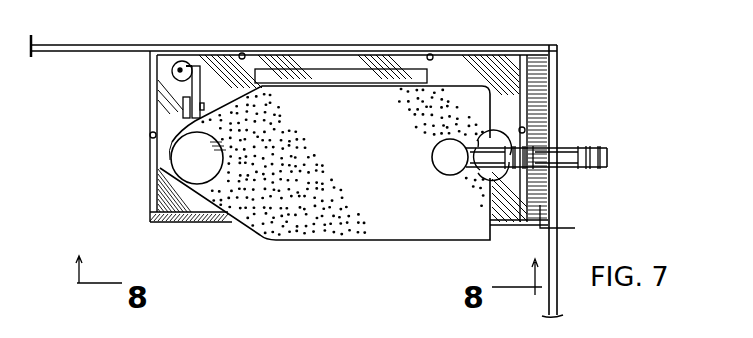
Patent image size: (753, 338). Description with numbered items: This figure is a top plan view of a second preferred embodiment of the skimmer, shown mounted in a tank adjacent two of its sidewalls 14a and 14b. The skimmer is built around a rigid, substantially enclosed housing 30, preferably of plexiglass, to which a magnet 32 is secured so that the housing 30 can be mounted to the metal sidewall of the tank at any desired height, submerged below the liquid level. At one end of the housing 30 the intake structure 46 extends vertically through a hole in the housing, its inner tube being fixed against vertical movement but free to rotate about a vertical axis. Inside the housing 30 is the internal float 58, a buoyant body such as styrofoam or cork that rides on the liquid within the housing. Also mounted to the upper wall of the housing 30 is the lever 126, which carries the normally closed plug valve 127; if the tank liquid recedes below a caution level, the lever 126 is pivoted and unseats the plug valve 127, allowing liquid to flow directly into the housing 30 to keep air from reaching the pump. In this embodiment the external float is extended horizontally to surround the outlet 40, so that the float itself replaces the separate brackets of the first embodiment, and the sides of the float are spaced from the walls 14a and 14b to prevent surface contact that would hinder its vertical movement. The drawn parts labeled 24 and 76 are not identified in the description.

The sidewall of the tank 14a is at (217, 45).
The sidewall of the tank 14b is at (557, 79).
The hose fitting 24 is at (581, 143).
The housing 30 is at (141, 216).
The magnet 32 is at (540, 222).
The outlet 40 is at (441, 170).
The intake structure 46 is at (162, 160).
The internal float 58 is at (333, 68).
The diaphragm panel 76 is at (361, 242).
The lever 126 is at (192, 92).
The plug valve 127 is at (172, 68).